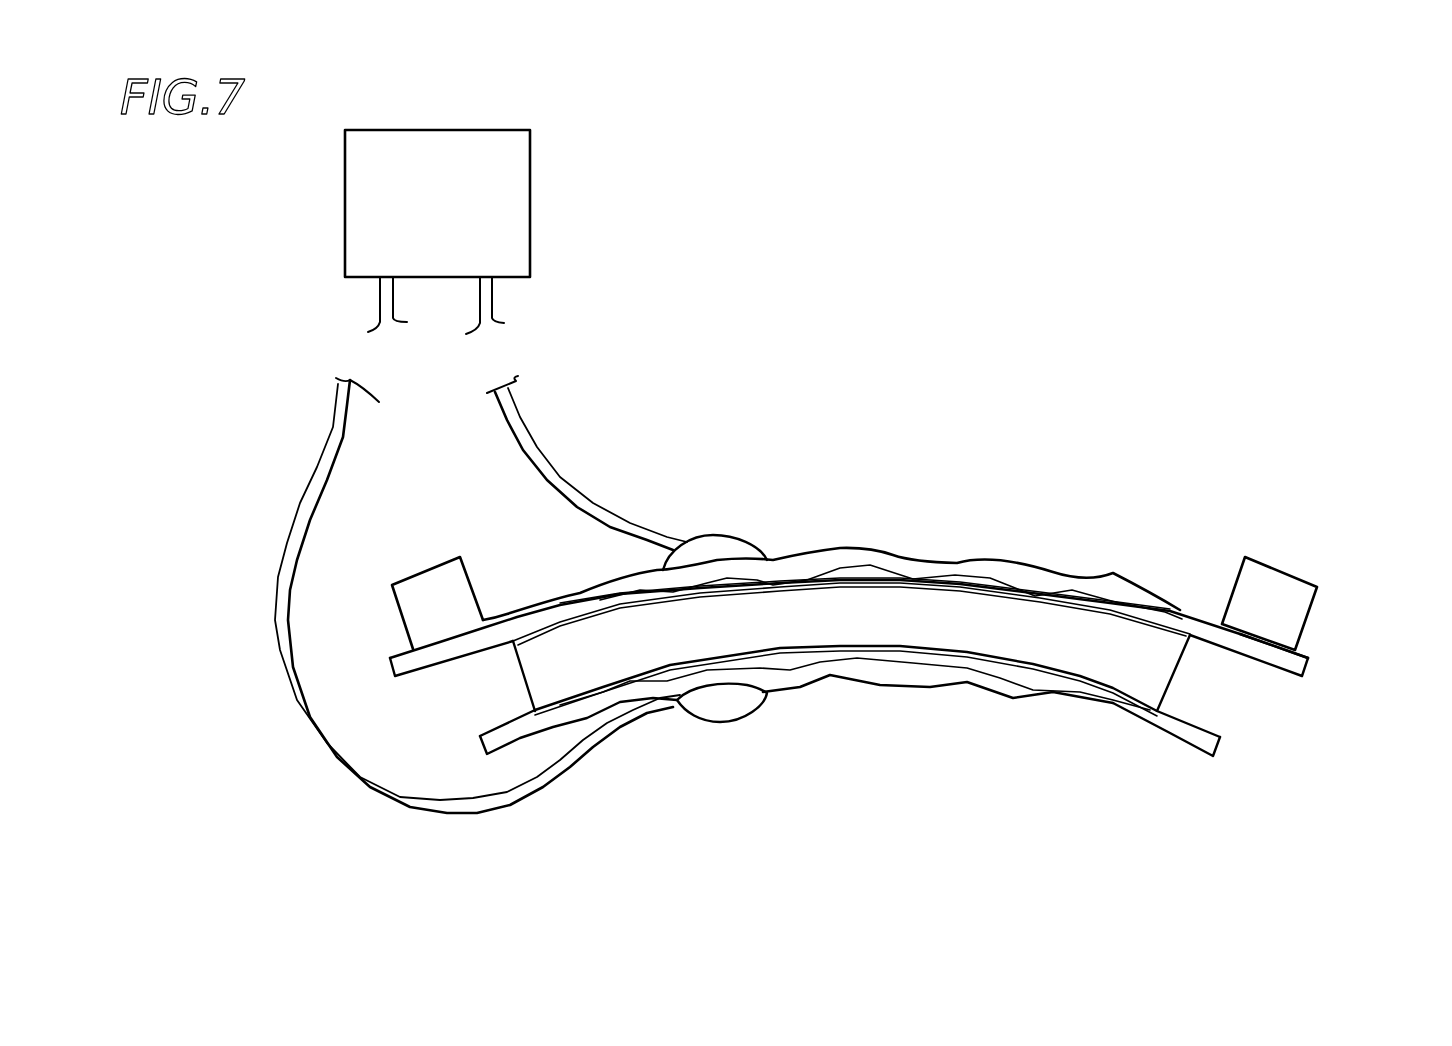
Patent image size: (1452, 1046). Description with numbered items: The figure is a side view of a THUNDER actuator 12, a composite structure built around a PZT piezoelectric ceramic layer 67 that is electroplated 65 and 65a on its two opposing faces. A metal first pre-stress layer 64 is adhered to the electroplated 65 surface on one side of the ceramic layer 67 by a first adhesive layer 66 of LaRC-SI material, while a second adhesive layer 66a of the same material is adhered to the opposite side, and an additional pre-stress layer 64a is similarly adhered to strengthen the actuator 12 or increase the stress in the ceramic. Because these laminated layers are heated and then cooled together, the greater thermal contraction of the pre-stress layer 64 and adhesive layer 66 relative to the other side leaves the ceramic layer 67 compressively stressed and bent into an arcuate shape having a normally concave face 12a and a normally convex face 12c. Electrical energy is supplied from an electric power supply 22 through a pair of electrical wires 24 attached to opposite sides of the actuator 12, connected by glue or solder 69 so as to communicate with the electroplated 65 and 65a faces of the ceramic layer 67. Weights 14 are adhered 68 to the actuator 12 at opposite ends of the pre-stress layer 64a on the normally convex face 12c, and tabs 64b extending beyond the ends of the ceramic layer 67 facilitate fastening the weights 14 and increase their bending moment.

The electric power supply 22 is at (530, 228).
The electrical wires 24 is at (347, 403).
The weights 14 is at (458, 578).
The glue or solder 69 is at (731, 545).
The tabs 64b is at (455, 660).
The PZT piezoelectric ceramic layer 67 is at (884, 633).
The second adhesive layer 66a is at (1103, 610).
The electroplated face 65a is at (1047, 600).
The additional pre-stress layer 64a is at (953, 565).
The first adhesive layer 66 is at (915, 663).
The electroplated face 65 is at (1113, 703).
The first pre-stress layer 64 is at (1053, 690).
The adhesive 68 is at (1300, 645).
The normally convex face 12c is at (872, 522).
The normally concave face 12a is at (823, 712).
The THUNDER actuator 12 is at (1303, 723).